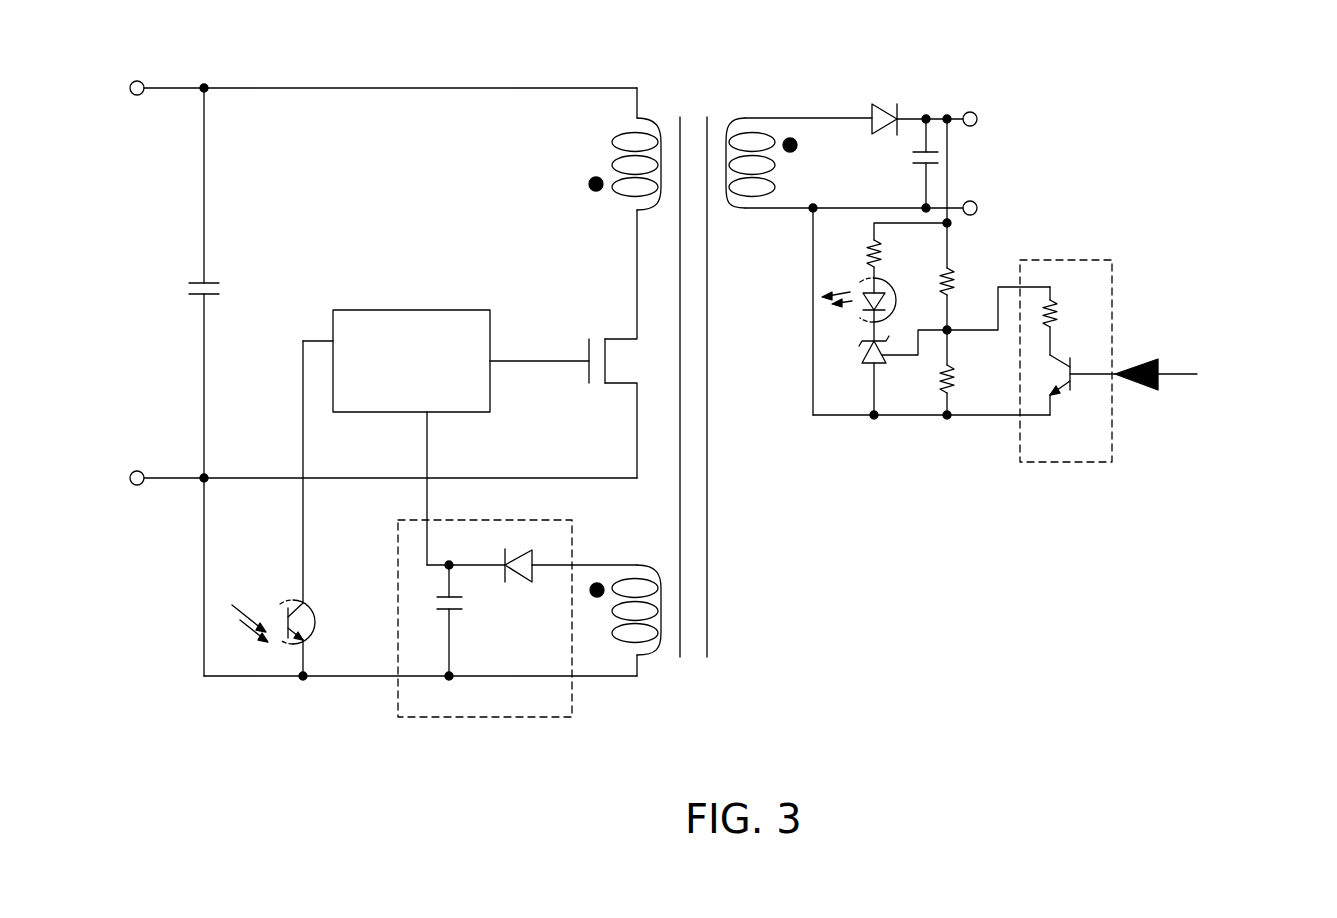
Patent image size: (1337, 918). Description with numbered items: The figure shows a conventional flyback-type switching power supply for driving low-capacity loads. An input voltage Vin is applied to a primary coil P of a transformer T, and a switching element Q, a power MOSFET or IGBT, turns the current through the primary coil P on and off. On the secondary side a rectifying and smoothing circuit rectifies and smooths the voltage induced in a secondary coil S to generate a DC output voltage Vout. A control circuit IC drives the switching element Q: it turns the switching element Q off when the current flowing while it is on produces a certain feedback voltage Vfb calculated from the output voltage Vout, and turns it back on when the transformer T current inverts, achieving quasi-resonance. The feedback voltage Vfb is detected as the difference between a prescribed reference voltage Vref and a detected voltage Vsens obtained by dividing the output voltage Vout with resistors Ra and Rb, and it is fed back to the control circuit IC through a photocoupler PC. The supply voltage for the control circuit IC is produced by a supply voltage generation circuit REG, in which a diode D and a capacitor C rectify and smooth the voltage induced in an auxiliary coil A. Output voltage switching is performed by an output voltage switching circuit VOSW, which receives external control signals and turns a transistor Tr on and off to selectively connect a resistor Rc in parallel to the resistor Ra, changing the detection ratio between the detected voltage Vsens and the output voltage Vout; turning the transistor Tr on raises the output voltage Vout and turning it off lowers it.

The input voltage Vin is at (378, 363).
The control circuit IC is at (461, 424).
The feedback voltage Vfb is at (292, 466).
The switching element Q is at (613, 344).
The transformer T is at (694, 354).
The primary coil P is at (620, 149).
The secondary coil S is at (767, 163).
The auxiliary coil A is at (625, 607).
The photocoupler PC is at (589, 451).
The supply voltage generation circuit REG is at (517, 645).
The diode D is at (571, 555).
The capacitor C is at (459, 620).
The output voltage Vout is at (897, 259).
The reference voltage Vref is at (903, 374).
The resistor Rb is at (962, 309).
The resistor Ra is at (963, 381).
The resistor Rc is at (1068, 321).
The detected voltage Vsens is at (951, 327).
The output voltage switching circuit VOSW is at (1127, 396).
The switching element (transistor) Tr is at (1179, 397).